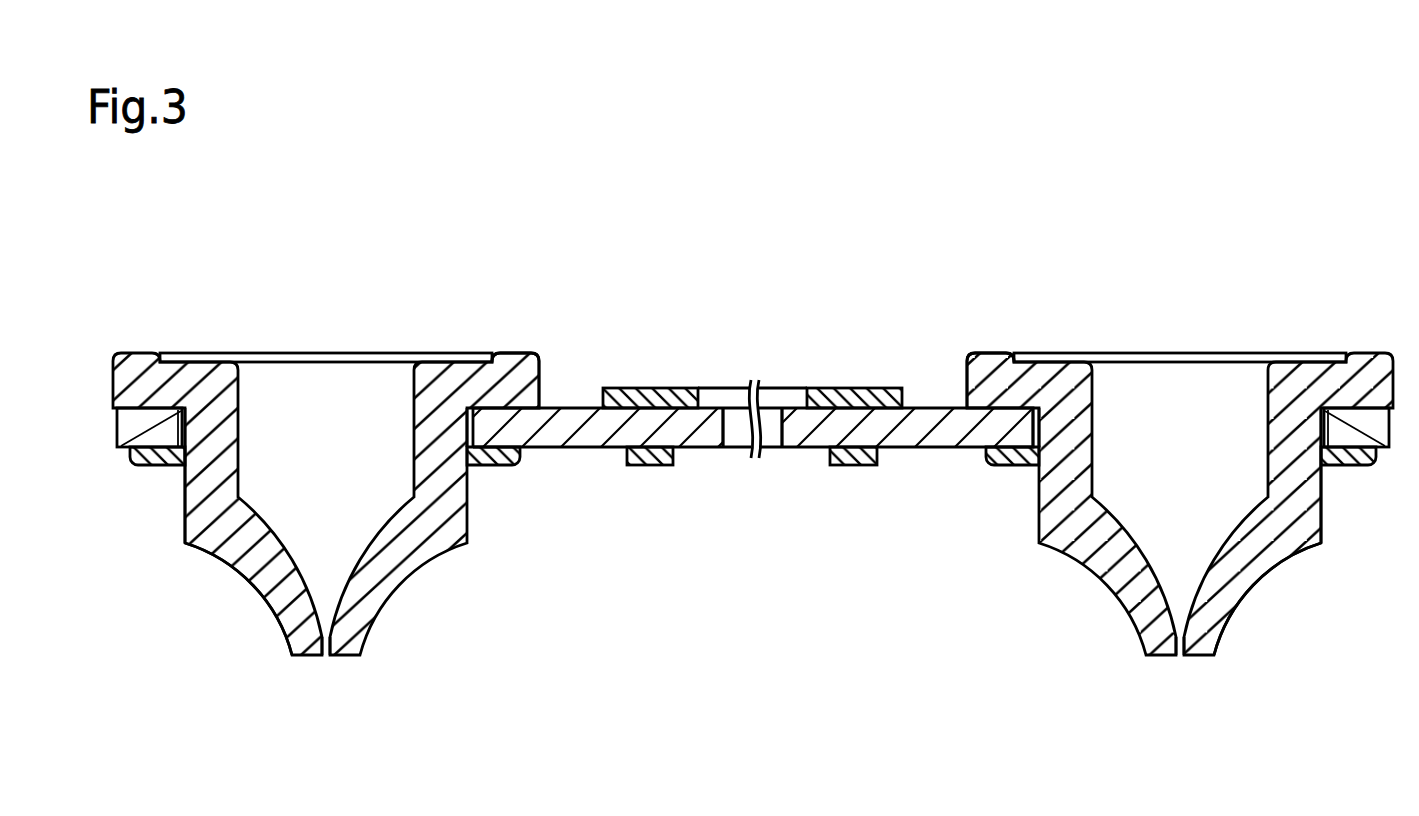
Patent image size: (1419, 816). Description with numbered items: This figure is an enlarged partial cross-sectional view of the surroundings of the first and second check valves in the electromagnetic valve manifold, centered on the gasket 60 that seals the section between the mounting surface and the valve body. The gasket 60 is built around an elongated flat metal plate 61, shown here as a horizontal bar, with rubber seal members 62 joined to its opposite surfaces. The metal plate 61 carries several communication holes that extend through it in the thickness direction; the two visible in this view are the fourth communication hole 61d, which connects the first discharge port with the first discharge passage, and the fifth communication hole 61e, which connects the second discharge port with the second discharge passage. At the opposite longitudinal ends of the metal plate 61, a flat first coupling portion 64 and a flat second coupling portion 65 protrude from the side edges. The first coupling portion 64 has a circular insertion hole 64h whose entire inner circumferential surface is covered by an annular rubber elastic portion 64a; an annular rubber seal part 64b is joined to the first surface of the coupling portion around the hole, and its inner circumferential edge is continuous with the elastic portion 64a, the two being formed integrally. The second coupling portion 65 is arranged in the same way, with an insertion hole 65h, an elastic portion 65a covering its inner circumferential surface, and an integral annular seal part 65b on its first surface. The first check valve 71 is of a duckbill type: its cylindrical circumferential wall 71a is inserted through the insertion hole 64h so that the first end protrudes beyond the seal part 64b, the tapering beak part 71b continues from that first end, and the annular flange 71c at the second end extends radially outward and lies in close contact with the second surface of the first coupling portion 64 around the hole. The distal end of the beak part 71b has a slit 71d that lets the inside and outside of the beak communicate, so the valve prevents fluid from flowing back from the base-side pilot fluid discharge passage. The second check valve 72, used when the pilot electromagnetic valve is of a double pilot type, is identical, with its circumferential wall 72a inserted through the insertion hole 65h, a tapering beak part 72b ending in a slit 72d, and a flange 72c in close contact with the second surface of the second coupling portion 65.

The gasket 60 is at (852, 362).
The metal plate 61 is at (590, 448).
The fourth communication hole 61d is at (725, 448).
The fifth communication hole 61e is at (776, 448).
The seal member 62 is at (650, 388).
The first coupling portion 64 is at (118, 428).
The elastic portion 64a is at (182, 440).
The seal part 64b is at (500, 467).
The insertion hole 64h is at (469, 432).
The second coupling portion 65 is at (1388, 428).
The elastic portion 65a is at (1343, 467).
The seal part 65b is at (1002, 466).
The insertion hole 65h is at (1037, 432).
The first check valve 71 is at (117, 364).
The circumferential wall 71a is at (185, 518).
The beak part 71b is at (268, 585).
The flange 71c is at (540, 377).
The slit 71d is at (333, 657).
The second check valve 72 is at (1386, 363).
The circumferential wall 72a is at (1313, 517).
The beak part 72b is at (1237, 585).
The flange 72c is at (963, 380).
The slit 72d is at (1175, 657).